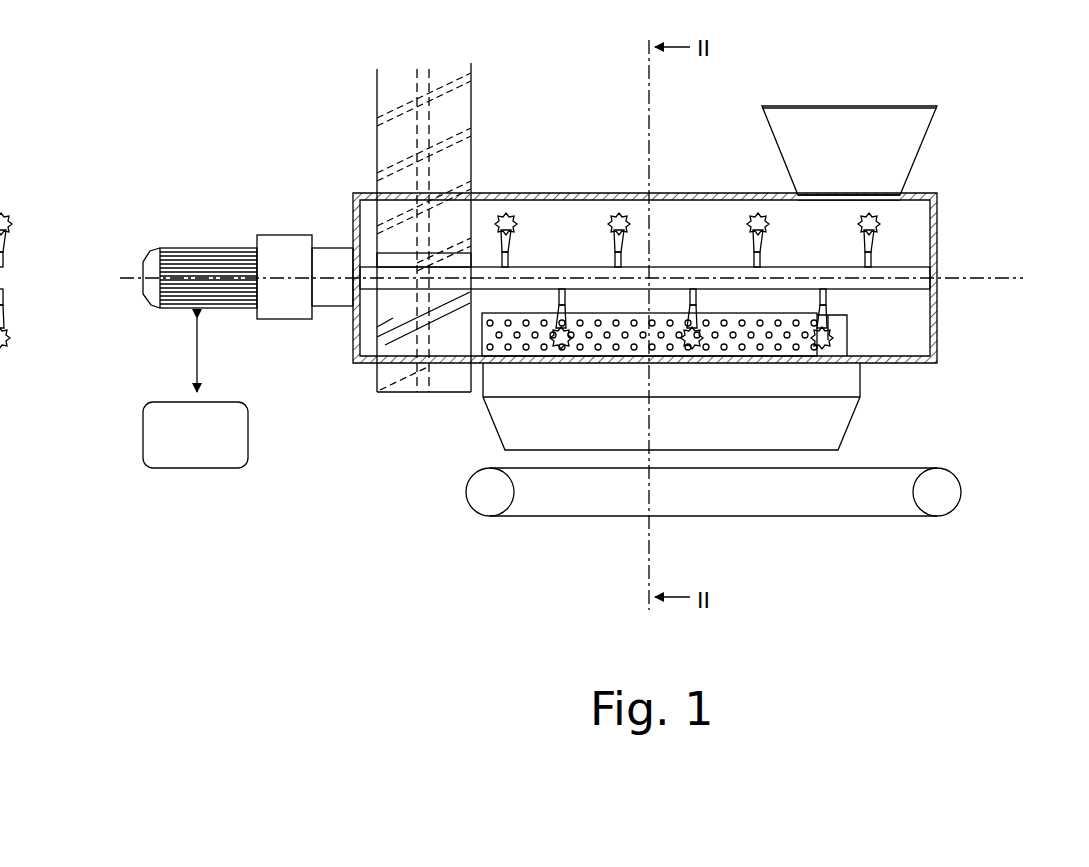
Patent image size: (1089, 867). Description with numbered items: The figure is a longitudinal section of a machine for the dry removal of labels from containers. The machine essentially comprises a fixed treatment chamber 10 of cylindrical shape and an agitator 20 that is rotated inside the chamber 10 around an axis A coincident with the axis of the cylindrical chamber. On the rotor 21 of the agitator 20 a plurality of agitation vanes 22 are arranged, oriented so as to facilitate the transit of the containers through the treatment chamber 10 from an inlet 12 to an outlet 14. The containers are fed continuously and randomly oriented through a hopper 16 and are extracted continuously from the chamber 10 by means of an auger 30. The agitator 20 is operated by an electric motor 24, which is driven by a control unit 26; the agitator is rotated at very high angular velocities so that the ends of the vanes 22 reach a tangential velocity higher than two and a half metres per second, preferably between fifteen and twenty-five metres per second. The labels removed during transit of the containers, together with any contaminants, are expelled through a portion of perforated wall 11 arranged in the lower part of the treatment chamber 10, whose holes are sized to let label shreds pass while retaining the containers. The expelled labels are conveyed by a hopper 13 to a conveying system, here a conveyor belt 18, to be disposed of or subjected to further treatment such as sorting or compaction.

The treatment chamber 10 is at (937, 325).
The perforated wall 11 is at (613, 332).
The inlet 12 is at (858, 190).
The hopper 13 is at (785, 420).
The outlet 14 is at (355, 325).
The hopper 16 is at (858, 145).
The conveyor belt 18 is at (835, 497).
The agitator 20 is at (888, 253).
The rotor 21 is at (683, 268).
The agitation vanes 22 is at (616, 226).
The electric motor 24 is at (210, 255).
The control unit 26 is at (211, 448).
The auger 30 is at (377, 150).
The axis A is at (1003, 280).